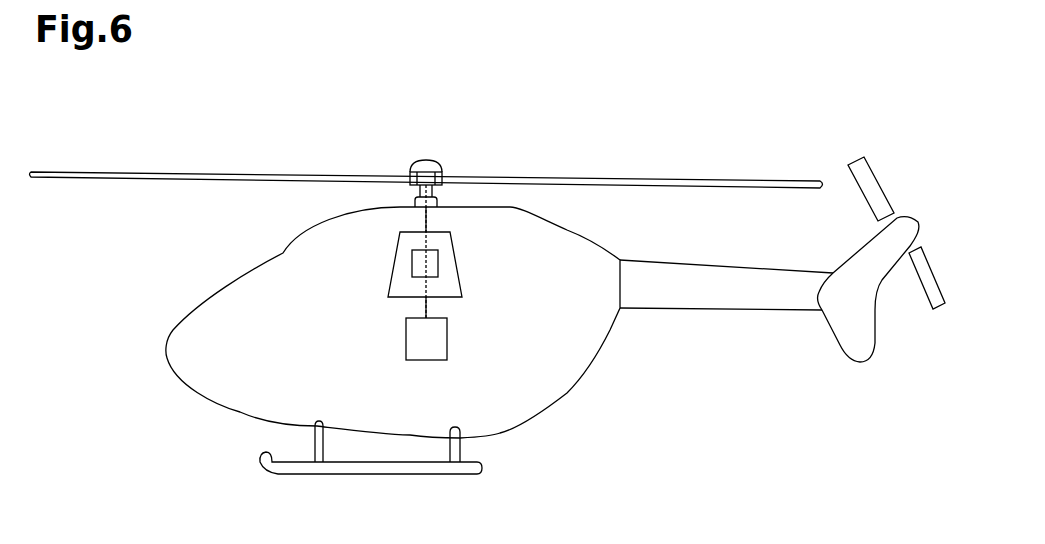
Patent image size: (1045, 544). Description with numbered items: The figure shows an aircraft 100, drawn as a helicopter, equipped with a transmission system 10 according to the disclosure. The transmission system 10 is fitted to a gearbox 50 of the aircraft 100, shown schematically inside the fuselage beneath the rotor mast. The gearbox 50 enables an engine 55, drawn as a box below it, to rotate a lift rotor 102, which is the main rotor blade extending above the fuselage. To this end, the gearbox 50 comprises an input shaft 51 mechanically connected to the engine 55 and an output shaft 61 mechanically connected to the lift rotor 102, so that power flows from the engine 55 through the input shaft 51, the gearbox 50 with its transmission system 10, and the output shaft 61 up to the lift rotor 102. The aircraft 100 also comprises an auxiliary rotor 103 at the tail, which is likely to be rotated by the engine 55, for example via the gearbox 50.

The aircraft 100 is at (685, 395).
The lift rotor 102 is at (577, 178).
The auxiliary rotor 103 is at (880, 190).
The transmission system 10 is at (412, 258).
The gearbox 50 is at (462, 283).
The input shaft 51 is at (423, 308).
The engine 55 is at (447, 347).
The output shaft 61 is at (427, 221).